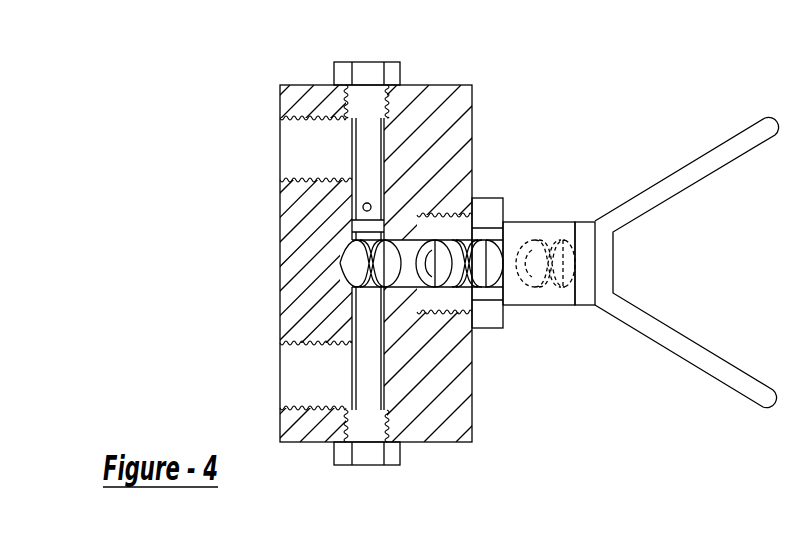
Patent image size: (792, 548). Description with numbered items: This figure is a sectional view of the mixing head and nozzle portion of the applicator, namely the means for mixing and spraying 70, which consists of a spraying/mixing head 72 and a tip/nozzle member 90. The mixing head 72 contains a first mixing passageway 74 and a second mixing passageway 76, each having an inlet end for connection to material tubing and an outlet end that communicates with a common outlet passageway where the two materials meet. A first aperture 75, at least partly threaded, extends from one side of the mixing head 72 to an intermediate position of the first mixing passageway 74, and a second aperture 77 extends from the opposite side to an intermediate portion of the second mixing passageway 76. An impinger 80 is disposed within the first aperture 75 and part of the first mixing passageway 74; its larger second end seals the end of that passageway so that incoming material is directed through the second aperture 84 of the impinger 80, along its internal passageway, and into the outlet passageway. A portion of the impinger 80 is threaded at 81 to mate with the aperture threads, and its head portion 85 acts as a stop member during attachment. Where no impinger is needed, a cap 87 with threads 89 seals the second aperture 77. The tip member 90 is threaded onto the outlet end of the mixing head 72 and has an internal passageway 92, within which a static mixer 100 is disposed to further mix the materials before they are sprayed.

The means for mixing and spraying 70 is at (571, 78).
The spraying/mixing head 72 is at (465, 138).
The first mixing passageway 74 is at (330, 168).
The first aperture 75 is at (345, 97).
The second mixing passageway 76 is at (330, 385).
The second aperture 77 is at (387, 432).
The impinger 80 is at (355, 135).
The threaded portion of impinger 81 is at (385, 97).
The second aperture of impinger 84 is at (363, 207).
The head portion 85 is at (373, 62).
The cap 87 is at (400, 465).
The threads 89 is at (352, 443).
The tip/nozzle member 90 is at (595, 332).
The internal passageway 92 is at (538, 222).
The static mixer 100 is at (476, 297).